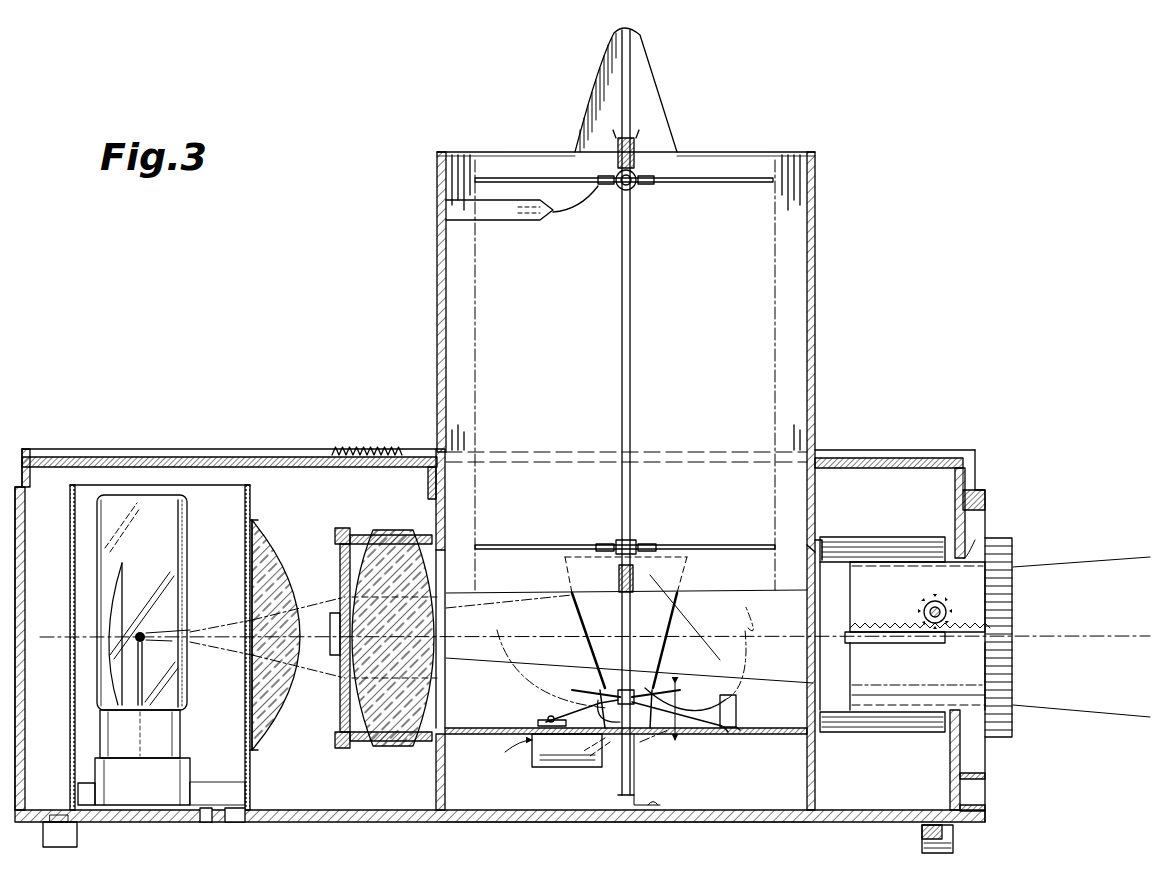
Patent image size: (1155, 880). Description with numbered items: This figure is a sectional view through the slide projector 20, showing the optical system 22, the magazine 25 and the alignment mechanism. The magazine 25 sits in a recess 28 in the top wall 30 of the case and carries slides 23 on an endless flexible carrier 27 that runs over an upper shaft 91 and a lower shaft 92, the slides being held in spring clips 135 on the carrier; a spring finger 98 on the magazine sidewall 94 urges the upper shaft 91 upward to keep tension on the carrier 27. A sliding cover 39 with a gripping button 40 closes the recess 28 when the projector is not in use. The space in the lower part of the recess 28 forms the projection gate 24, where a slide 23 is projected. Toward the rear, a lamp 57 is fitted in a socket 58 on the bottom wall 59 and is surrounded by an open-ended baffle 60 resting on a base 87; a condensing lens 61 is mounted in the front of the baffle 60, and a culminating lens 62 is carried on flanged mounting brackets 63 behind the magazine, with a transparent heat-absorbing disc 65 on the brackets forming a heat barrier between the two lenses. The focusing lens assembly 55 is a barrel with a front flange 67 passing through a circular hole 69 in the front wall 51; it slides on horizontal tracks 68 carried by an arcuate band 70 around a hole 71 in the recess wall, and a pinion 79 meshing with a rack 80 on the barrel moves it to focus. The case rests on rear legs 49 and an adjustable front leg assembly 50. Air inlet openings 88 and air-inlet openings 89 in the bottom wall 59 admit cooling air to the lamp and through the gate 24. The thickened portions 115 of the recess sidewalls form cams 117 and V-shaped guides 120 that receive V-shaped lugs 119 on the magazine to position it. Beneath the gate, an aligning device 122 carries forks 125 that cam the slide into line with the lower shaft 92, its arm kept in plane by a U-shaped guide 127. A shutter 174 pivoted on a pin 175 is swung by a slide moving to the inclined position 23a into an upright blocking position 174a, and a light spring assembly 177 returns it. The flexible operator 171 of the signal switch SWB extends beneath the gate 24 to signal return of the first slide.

The slide projector 20 is at (85, 418).
The optical system 22 is at (285, 492).
The slides 23 is at (628, 85).
The inclined slide position 23a is at (745, 632).
The projection gate 24 is at (542, 684).
The magazine 25 is at (818, 244).
The endless flexible carrier 27 is at (612, 293).
The magazine recess 28 is at (815, 448).
The top wall 30 is at (165, 455).
The sliding cover 39 is at (97, 455).
The button 40 is at (368, 448).
The rear legs 49 is at (78, 832).
The front leg assembly 50 is at (920, 833).
The front wall 51 is at (952, 484).
The focusing lens assembly 55 is at (902, 636).
The lamp 57 is at (186, 507).
The socket 58 is at (183, 768).
The bottom wall 59 is at (300, 815).
The baffle 60 is at (72, 570).
The condensing lens 61 is at (265, 555).
The culminating lens 62 is at (436, 590).
The flanged mounting brackets 63 is at (358, 535).
The heat-absorbing disc 65 is at (340, 572).
The flange 67 is at (1013, 553).
The horizontal tracks 68 is at (860, 540).
The circular hole 69 is at (968, 558).
The arcuate band 70 is at (824, 540).
The hole 71 is at (806, 556).
The pinion 79 is at (942, 602).
The rack 80 is at (1005, 630).
The base 87 is at (70, 790).
The air inlet openings 88 is at (215, 822).
The air-inlet openings 89 is at (466, 822).
The upper shaft 91 is at (638, 175).
The lower shaft 92 is at (637, 545).
The sidewall 94 is at (775, 158).
The spring finger 98 is at (522, 203).
The thickened lower central portion 115 is at (685, 580).
The cam 117 is at (690, 548).
The V-shaped lugs 119 is at (685, 612).
The V-shaped guides 120 is at (668, 648).
The aligning device 122 is at (648, 755).
The forks 125 is at (760, 655).
The U-shaped guide 127 is at (615, 787).
The spring clips 135 is at (640, 148).
The switch operator 171 is at (592, 716).
The shutter 174 is at (700, 696).
The shutter blocking position 174a is at (748, 672).
The pin 175 is at (738, 706).
The light spring assembly 177 is at (730, 732).
The signal switch SWB is at (551, 762).